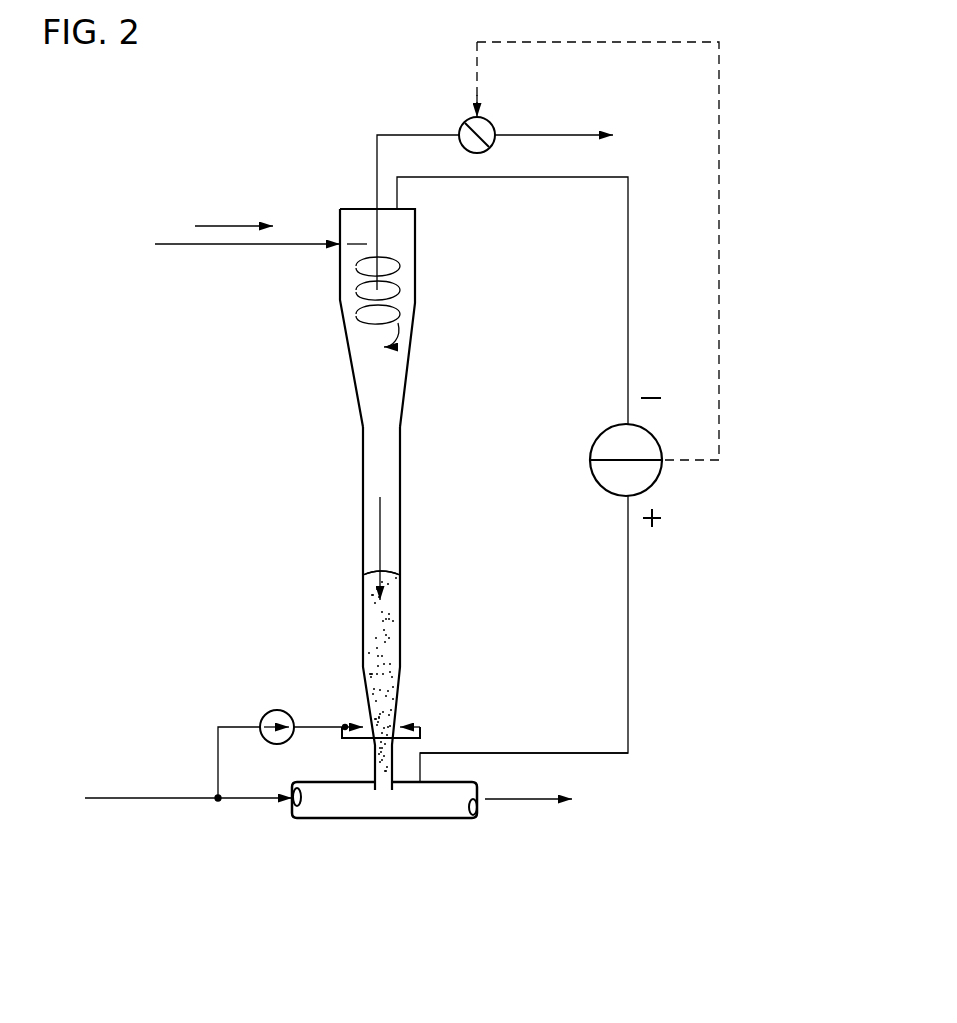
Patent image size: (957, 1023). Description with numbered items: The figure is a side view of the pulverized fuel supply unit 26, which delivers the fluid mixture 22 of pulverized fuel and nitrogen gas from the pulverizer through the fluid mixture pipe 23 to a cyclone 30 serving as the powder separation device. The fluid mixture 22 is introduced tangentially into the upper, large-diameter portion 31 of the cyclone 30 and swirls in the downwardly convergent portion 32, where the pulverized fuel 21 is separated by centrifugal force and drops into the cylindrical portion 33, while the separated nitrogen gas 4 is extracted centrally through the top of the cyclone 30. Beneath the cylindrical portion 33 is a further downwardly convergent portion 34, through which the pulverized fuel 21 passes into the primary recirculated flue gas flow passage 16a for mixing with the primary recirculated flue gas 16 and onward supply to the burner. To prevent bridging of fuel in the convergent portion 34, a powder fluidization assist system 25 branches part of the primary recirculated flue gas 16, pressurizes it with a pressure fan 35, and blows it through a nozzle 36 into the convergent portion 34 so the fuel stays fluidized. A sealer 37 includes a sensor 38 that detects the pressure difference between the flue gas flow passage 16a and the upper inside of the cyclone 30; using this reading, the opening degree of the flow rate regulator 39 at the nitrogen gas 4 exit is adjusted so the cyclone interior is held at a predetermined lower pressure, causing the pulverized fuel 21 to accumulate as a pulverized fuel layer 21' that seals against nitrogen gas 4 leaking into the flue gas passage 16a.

The nitrogen gas 4 is at (557, 134).
The primary recirculated flue gas 16 is at (130, 810).
The primary recirculated flue gas flow passage 16a is at (383, 819).
The pulverized fuel 21 is at (344, 634).
The pulverized fuel layer 21' is at (432, 552).
The fluid mixture 22 is at (220, 224).
The fluid mixture pipe 23 is at (243, 250).
The powder fluidization assist system 25 is at (218, 712).
The pulverized fuel supply unit 26 is at (203, 350).
The cyclone 30 is at (338, 401).
The upper, large-diameter portion 31 is at (416, 240).
The downwardly convergent portion 32 is at (408, 350).
The cylindrical portion 33 is at (363, 475).
The further downwardly convergent portion 34 is at (398, 726).
The pressure fan 35 is at (268, 711).
The nozzle 36 is at (356, 725).
The sealer 37 is at (724, 410).
The sensor 38 is at (600, 438).
The flow rate regulator 39 is at (462, 123).